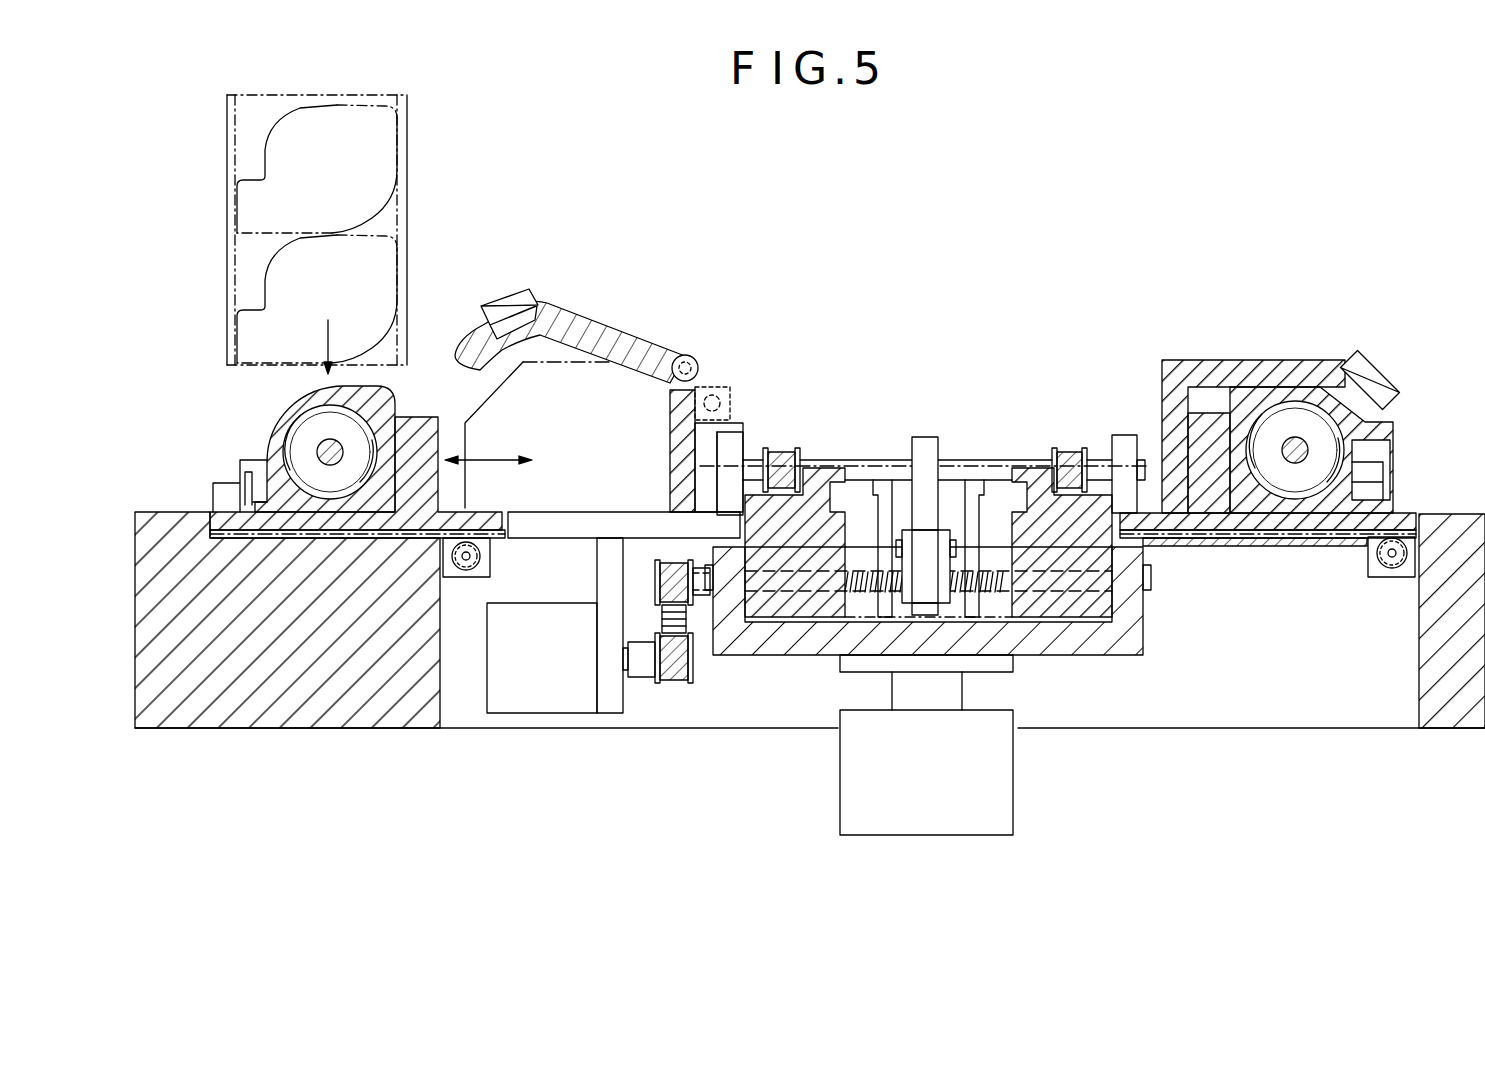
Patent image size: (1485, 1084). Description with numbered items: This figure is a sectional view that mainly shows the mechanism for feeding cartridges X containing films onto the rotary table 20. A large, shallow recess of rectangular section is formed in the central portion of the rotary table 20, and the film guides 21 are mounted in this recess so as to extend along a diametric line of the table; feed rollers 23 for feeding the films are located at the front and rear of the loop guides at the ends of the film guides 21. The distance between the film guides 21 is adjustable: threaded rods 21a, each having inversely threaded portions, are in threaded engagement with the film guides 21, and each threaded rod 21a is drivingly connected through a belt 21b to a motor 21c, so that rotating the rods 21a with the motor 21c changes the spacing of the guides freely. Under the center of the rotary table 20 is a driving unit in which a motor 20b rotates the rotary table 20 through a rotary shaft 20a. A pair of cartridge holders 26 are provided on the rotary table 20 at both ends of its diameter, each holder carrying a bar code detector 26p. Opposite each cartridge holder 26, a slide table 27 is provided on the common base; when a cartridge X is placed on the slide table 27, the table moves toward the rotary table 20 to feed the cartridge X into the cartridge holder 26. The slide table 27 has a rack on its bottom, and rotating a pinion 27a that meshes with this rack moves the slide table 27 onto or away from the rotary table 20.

The rotary table 20 is at (1142, 350).
The rotary shaft 20a is at (940, 689).
The motor 20b is at (997, 792).
The film guides 21 is at (814, 470).
The threaded rods 21a is at (865, 597).
The belt 21b is at (668, 677).
The motor 21c is at (553, 702).
The feed rollers 23 is at (933, 527).
The cartridge holders 26 is at (614, 311).
The bar code detector 26p is at (506, 304).
The slide table 27 is at (418, 417).
The pinion 27a is at (463, 562).
The cartridge X is at (280, 283).